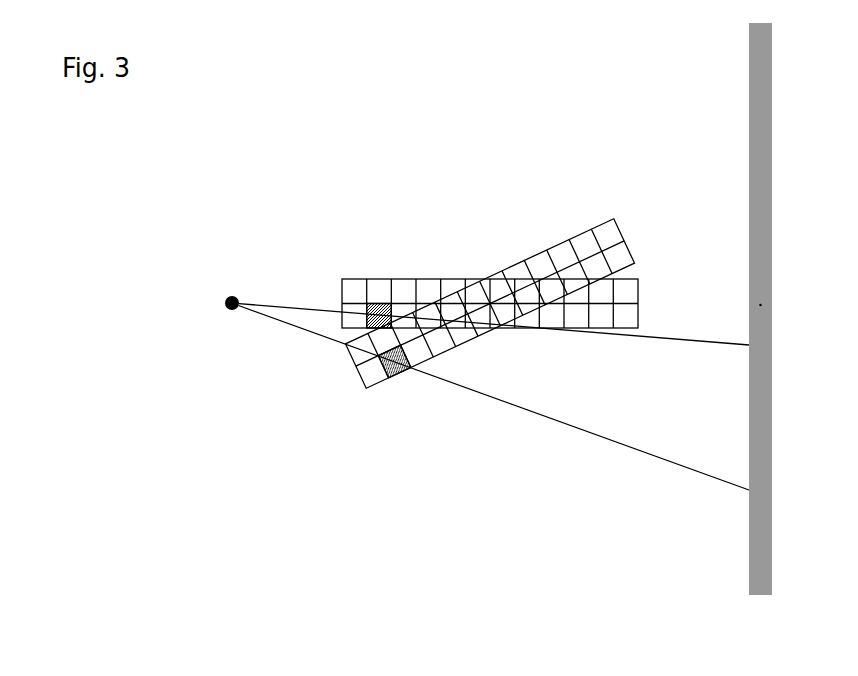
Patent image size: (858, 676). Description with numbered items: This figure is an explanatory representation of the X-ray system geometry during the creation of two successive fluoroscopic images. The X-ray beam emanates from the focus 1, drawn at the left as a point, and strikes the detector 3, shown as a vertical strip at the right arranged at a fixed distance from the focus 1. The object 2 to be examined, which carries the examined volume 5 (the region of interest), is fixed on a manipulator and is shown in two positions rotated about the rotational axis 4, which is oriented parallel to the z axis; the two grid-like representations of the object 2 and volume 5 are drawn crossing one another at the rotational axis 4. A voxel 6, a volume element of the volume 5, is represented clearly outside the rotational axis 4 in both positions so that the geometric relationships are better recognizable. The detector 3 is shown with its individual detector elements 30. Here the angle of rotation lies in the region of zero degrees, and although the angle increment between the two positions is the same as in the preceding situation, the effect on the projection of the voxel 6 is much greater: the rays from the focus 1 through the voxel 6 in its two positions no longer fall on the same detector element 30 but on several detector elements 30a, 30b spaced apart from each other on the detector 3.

The focus 1 is at (229, 290).
The object 2 is at (517, 257).
The detector 3 is at (774, 218).
The rotational axis 4 is at (490, 300).
The volume 5 is at (527, 247).
The voxel 6 is at (377, 300).
The detector element 30 is at (764, 304).
The detector element 30a is at (764, 347).
The detector element 30b is at (764, 481).